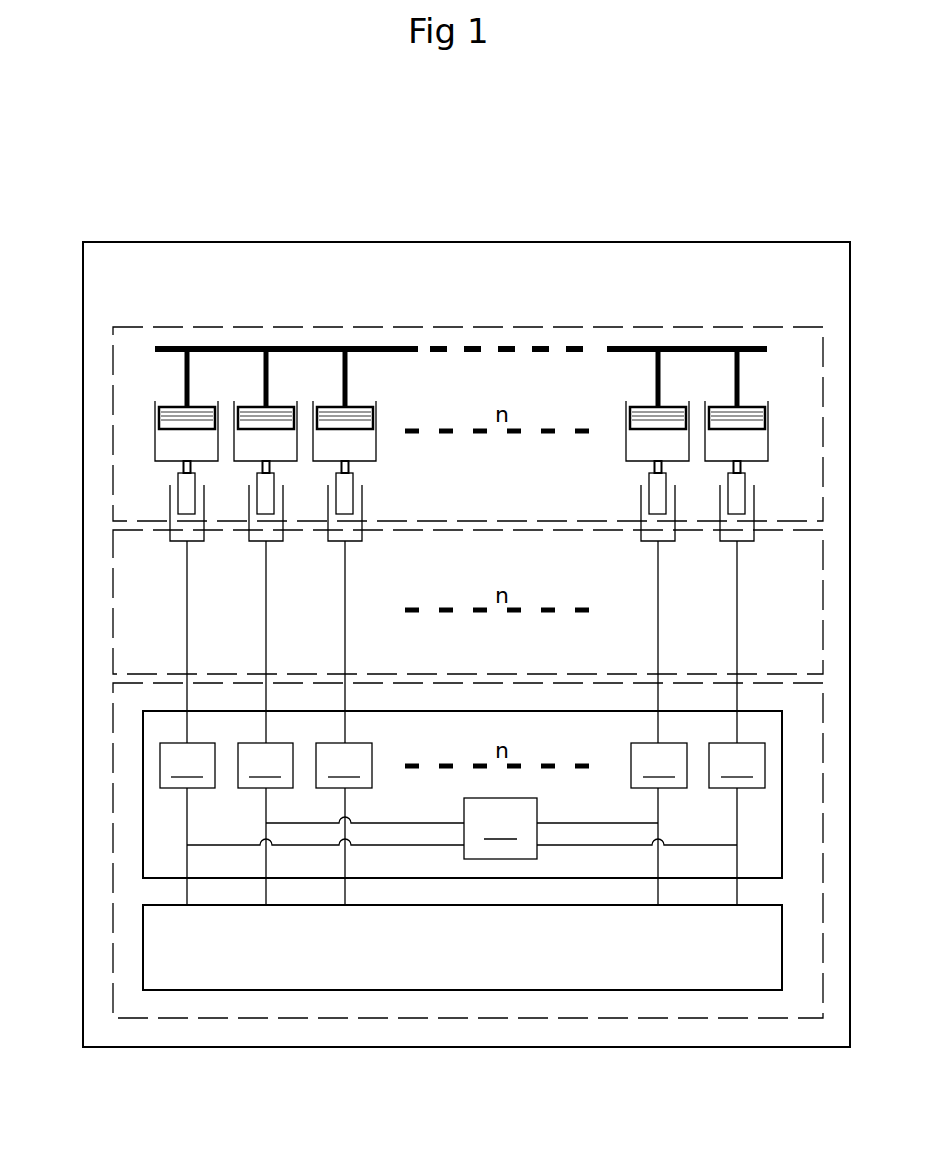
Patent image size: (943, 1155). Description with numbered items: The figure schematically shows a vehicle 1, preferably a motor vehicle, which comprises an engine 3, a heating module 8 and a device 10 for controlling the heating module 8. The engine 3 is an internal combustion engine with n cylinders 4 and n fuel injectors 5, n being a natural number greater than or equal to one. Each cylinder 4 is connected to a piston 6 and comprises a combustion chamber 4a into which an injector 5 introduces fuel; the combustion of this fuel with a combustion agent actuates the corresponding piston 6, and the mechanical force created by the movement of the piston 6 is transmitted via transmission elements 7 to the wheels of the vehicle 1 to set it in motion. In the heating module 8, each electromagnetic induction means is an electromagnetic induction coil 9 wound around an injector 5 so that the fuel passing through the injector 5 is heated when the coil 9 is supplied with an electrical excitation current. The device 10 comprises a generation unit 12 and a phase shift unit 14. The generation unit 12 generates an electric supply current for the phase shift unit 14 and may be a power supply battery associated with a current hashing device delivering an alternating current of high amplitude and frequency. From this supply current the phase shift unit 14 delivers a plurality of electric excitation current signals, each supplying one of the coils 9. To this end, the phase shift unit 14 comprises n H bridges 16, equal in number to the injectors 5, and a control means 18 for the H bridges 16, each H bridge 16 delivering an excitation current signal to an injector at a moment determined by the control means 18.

The vehicle 1 is at (185, 242).
The engine 3 is at (113, 421).
The cylinder 4 is at (377, 415).
The combustion chamber 4a is at (358, 446).
The fuel injector 5 is at (189, 494).
The piston 6 is at (188, 406).
The transmission elements 7 is at (305, 349).
The heating module 8 is at (113, 618).
The electromagnetic induction coil 9 is at (194, 542).
The device for controlling the heating module 10 is at (113, 810).
The generation unit 12 is at (143, 928).
The phase shift unit 14 is at (143, 765).
The H bridge 16 is at (462, 765).
The control means 18 is at (462, 828).